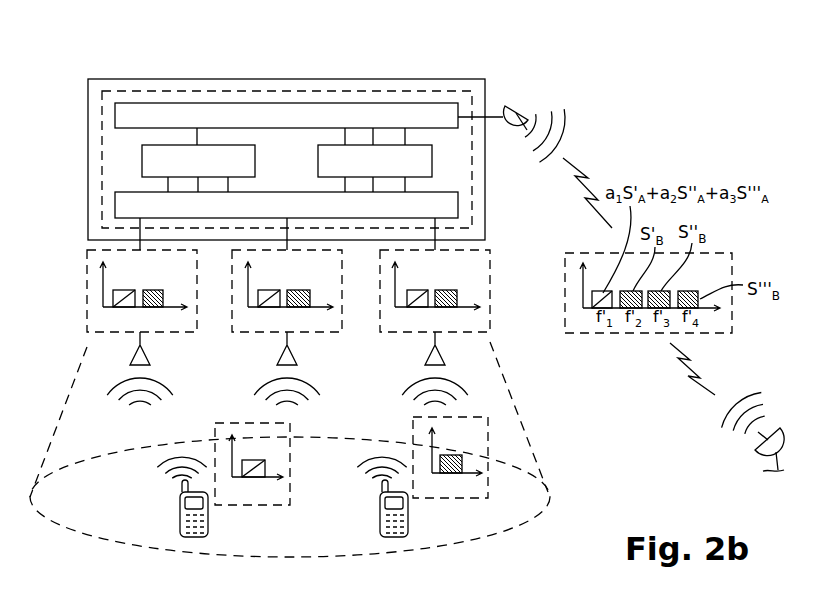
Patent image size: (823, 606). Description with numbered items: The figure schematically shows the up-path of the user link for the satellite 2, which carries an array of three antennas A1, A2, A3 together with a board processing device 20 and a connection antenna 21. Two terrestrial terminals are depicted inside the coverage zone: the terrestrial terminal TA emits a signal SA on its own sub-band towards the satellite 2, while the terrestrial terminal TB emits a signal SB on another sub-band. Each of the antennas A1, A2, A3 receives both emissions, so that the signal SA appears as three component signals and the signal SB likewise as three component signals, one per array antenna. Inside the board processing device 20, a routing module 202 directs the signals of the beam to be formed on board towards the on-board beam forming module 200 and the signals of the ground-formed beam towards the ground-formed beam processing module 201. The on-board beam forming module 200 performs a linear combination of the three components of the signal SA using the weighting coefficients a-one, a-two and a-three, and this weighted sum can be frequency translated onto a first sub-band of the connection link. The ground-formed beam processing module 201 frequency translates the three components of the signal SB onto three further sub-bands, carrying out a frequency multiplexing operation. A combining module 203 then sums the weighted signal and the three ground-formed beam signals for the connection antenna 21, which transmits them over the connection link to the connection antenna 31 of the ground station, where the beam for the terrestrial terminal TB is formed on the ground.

The satellite 2 is at (377, 76).
The board processing device 20 is at (247, 90).
The connection antenna 21 is at (513, 107).
The connection antenna 31 is at (765, 455).
The on-board beam forming module 200 is at (150, 159).
The ground-formed beam processing module 201 is at (423, 160).
The routing module 202 is at (127, 205).
The combining module 203 is at (196, 107).
The antenna A1 is at (130, 358).
The antenna A2 is at (295, 357).
The antenna A3 is at (443, 357).
The signal SA is at (250, 460).
The signal SB is at (458, 455).
The terrestrial terminal TA is at (178, 520).
The terrestrial terminal TB is at (380, 527).